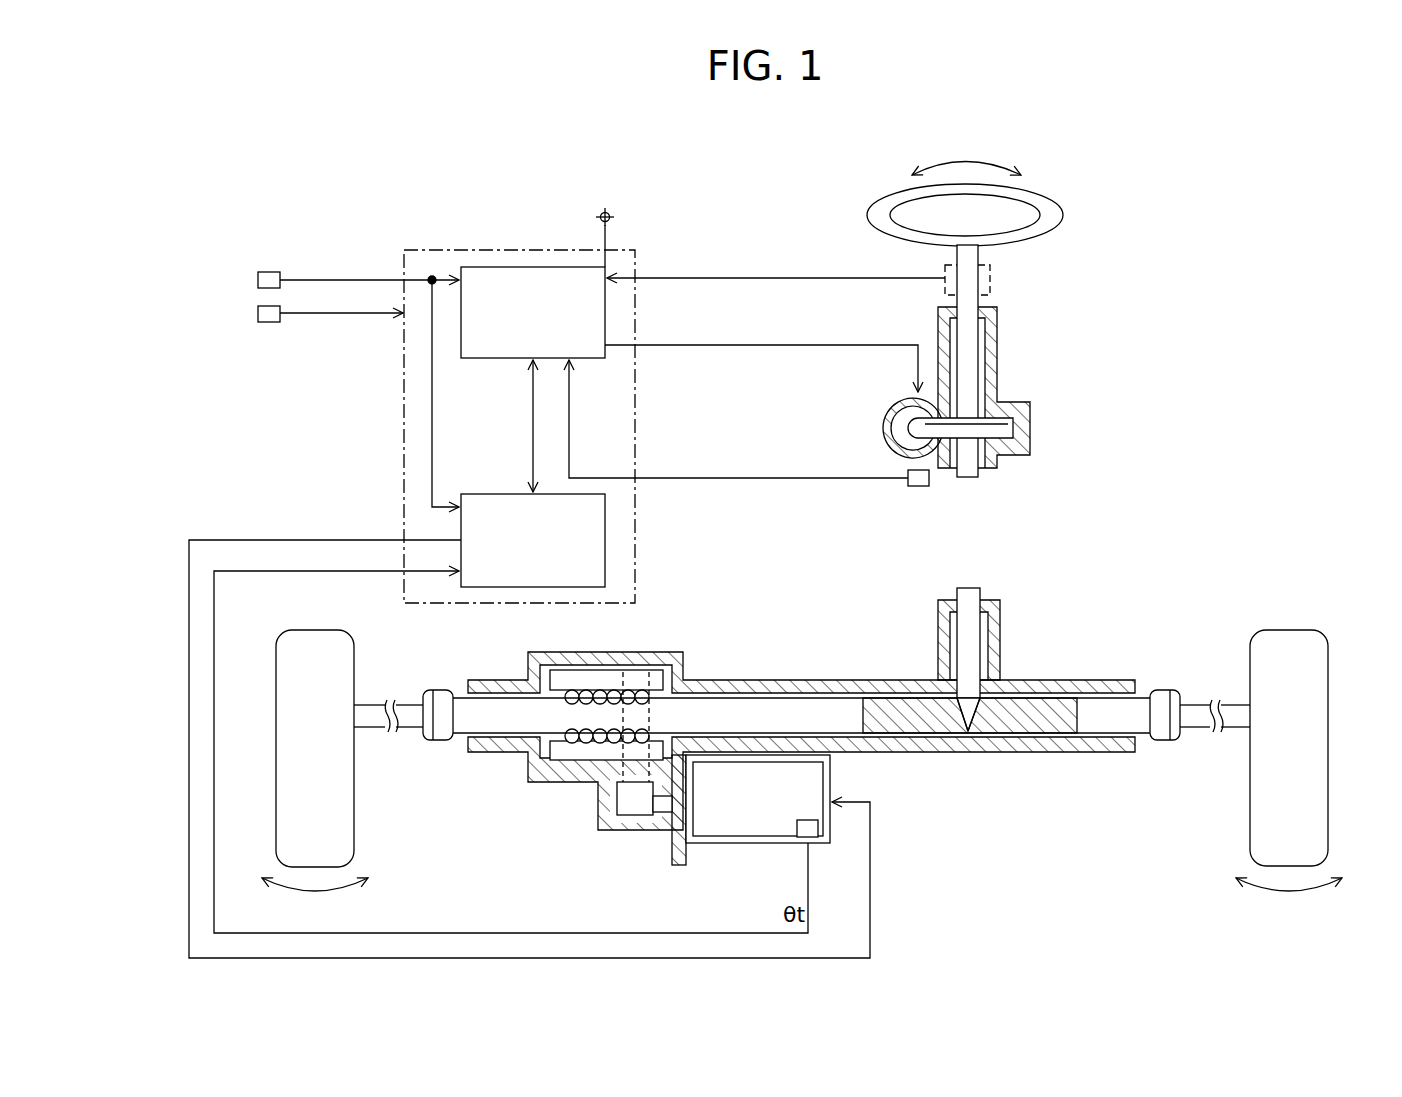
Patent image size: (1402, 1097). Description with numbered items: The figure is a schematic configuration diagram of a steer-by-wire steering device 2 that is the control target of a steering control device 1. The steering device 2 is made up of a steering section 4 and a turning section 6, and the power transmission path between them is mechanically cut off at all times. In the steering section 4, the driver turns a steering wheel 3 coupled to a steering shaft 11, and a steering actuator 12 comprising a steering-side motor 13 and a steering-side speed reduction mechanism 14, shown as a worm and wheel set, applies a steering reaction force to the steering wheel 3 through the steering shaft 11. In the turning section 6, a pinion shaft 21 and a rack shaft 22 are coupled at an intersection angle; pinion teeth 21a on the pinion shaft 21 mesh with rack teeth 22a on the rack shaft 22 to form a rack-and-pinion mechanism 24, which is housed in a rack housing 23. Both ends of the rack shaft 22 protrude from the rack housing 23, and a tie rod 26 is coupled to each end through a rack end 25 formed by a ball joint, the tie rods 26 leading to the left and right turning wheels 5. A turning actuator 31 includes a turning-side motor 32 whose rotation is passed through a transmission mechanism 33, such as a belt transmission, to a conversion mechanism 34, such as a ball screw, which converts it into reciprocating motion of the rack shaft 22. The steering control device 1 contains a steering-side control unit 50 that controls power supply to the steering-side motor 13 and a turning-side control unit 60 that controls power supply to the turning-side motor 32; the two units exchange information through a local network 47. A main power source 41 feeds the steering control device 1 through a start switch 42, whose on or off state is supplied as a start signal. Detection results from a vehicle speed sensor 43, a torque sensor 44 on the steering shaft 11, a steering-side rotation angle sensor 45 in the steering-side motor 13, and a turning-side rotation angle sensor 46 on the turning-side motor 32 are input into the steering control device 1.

The steering control device 1 is at (470, 243).
The steering device 2 is at (1117, 486).
The steering wheel 3 is at (1063, 215).
The steering section 4 is at (1054, 470).
The turning wheels 5 is at (312, 628).
The turning section 6 is at (1060, 580).
The steering shaft 11 is at (998, 332).
The steering actuator 12 is at (851, 421).
The steering-side motor 13 is at (906, 398).
The steering-side speed reduction mechanism 14 is at (926, 455).
The pinion shaft 21 is at (984, 699).
The pinion teeth 21a is at (966, 742).
The rack shaft 22 is at (715, 683).
The rack teeth 22a is at (898, 740).
The rack housing 23 is at (632, 660).
The rack-and-pinion mechanism 24 is at (801, 757).
The rack end 25 is at (437, 690).
The tie rod 26 is at (370, 735).
The turning actuator 31 is at (459, 856).
The turning-side motor 32 is at (832, 832).
The transmission mechanism 33 is at (624, 818).
The conversion mechanism 34 is at (560, 783).
The main power source 41 is at (606, 210).
The start switch 42 is at (258, 312).
The vehicle speed sensor 43 is at (258, 280).
The torque sensor 44 is at (992, 280).
The steering-side rotation angle sensor 45 is at (914, 488).
The turning-side rotation angle sensor 46 is at (808, 820).
The local network 47 is at (531, 428).
The steering-side control unit 50 is at (480, 362).
The turning-side control unit 60 is at (490, 494).